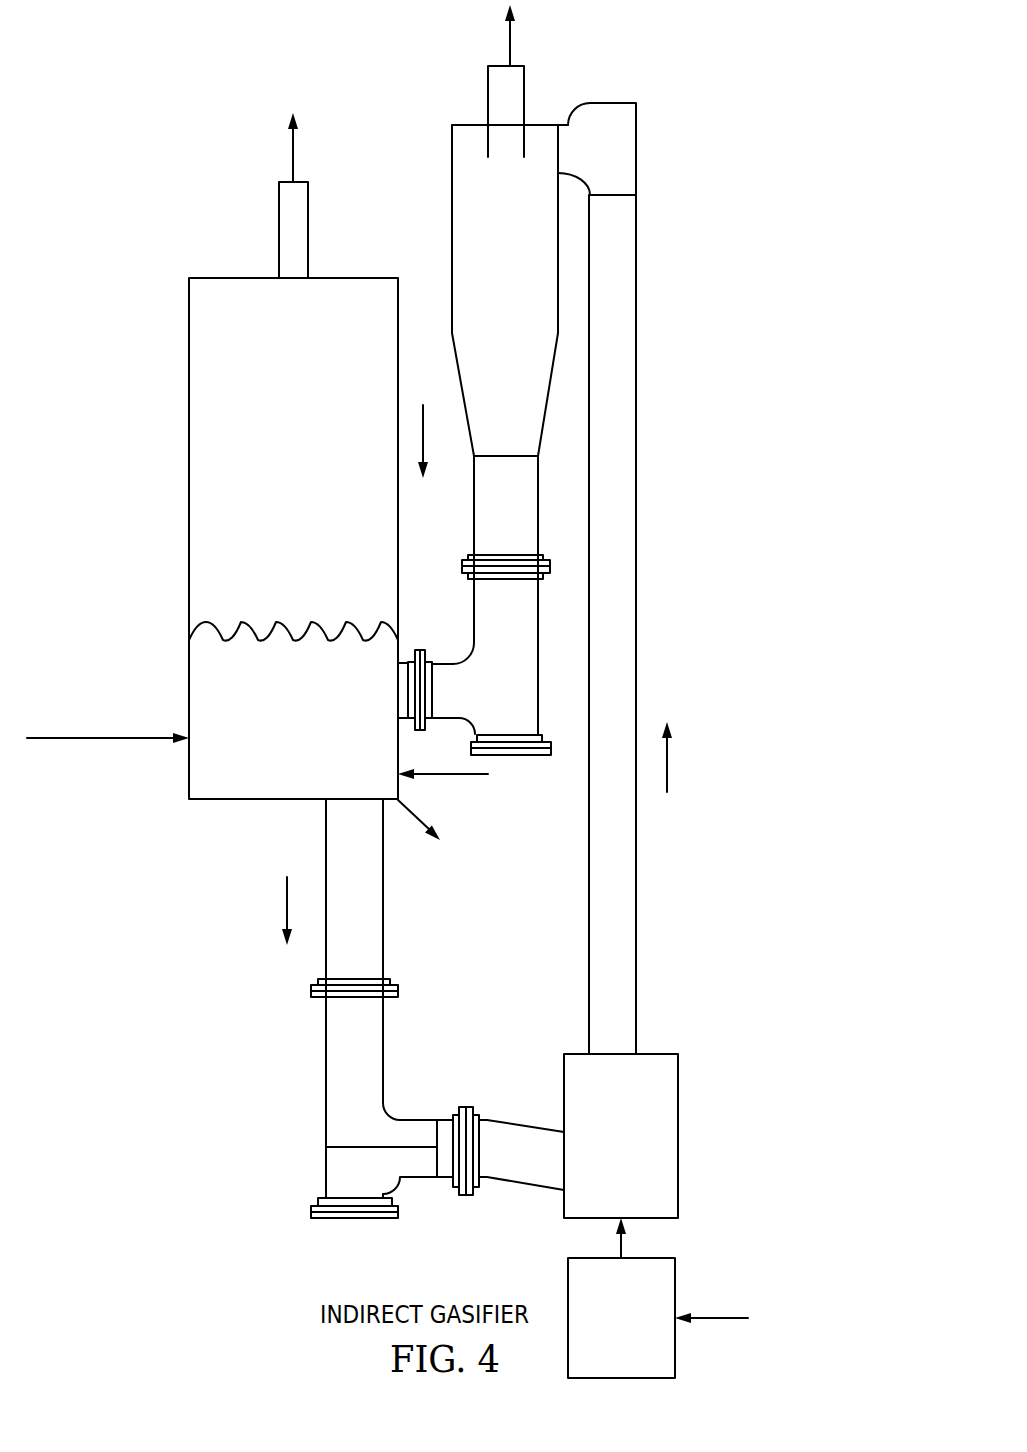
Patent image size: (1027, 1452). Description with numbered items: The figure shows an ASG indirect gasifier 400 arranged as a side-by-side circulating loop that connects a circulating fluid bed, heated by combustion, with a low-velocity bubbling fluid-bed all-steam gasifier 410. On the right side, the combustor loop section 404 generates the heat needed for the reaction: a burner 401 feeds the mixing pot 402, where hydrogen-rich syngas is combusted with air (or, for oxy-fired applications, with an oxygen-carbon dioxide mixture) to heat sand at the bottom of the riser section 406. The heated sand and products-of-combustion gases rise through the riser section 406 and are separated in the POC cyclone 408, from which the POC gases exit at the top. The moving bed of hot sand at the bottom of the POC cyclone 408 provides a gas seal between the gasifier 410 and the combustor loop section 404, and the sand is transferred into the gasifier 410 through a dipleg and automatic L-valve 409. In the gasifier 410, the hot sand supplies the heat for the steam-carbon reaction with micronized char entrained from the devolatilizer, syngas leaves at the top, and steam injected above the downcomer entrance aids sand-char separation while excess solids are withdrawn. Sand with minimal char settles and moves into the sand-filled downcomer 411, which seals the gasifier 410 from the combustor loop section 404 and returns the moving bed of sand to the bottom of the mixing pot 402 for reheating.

The ASG indirect gasifier 400 is at (134, 35).
The burner 401 is at (568, 1276).
The mixing pot 402 is at (595, 1190).
The combustor loop section 404 is at (700, 578).
The riser section 406 is at (615, 573).
The POC cyclone 408 is at (480, 249).
The L-valve 409 is at (538, 636).
The gasifier 410 is at (265, 581).
The solids transfer pipe 411 is at (300, 1118).